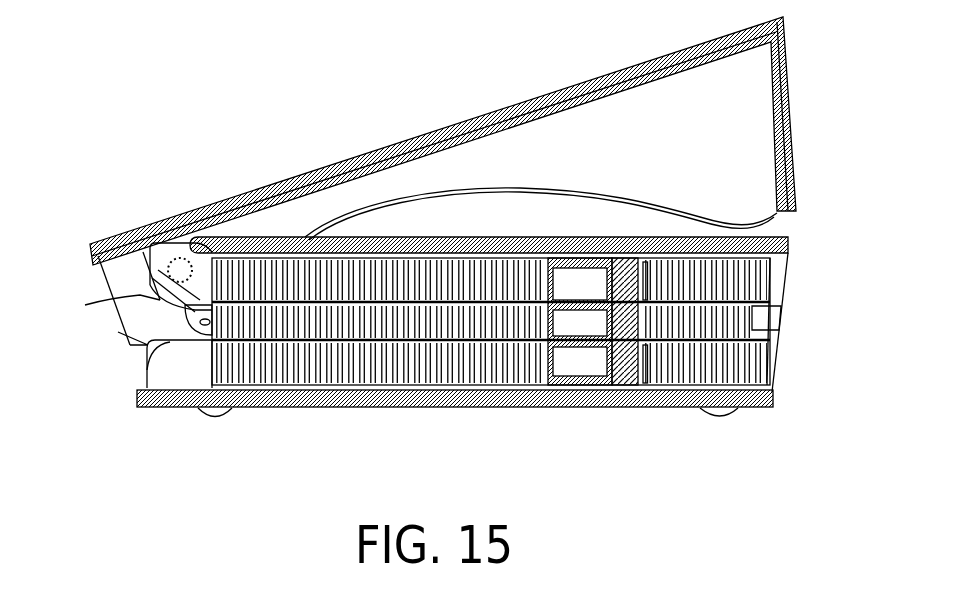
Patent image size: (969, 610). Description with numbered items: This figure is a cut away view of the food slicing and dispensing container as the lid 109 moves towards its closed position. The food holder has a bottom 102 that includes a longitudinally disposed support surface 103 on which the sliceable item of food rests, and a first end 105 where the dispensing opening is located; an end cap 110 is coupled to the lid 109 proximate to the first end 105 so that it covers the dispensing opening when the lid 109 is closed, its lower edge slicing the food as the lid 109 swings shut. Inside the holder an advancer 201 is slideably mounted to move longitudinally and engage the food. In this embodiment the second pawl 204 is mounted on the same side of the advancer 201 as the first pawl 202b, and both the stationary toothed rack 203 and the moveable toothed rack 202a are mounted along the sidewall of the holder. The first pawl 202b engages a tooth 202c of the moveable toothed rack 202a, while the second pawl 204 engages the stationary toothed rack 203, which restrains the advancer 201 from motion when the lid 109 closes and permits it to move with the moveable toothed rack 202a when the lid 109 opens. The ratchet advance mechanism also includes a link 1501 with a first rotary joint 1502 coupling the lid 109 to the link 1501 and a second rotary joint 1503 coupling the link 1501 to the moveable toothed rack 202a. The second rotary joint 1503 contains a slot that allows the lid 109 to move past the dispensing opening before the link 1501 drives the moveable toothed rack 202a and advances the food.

The bottom 102 is at (323, 408).
The support surface 103 is at (778, 393).
The first end 105 is at (788, 249).
The lid 109 is at (207, 206).
The end cap 110 is at (798, 128).
The advancer 201 is at (633, 363).
The moveable toothed rack 202a is at (413, 342).
The first pawl 202b is at (592, 355).
The tooth 202c is at (265, 342).
The stationary toothed rack 203 is at (766, 283).
The second pawl 204 is at (572, 282).
The link 1501 is at (137, 335).
The first rotary joint 1502 is at (115, 303).
The second rotary joint 1503 is at (147, 378).